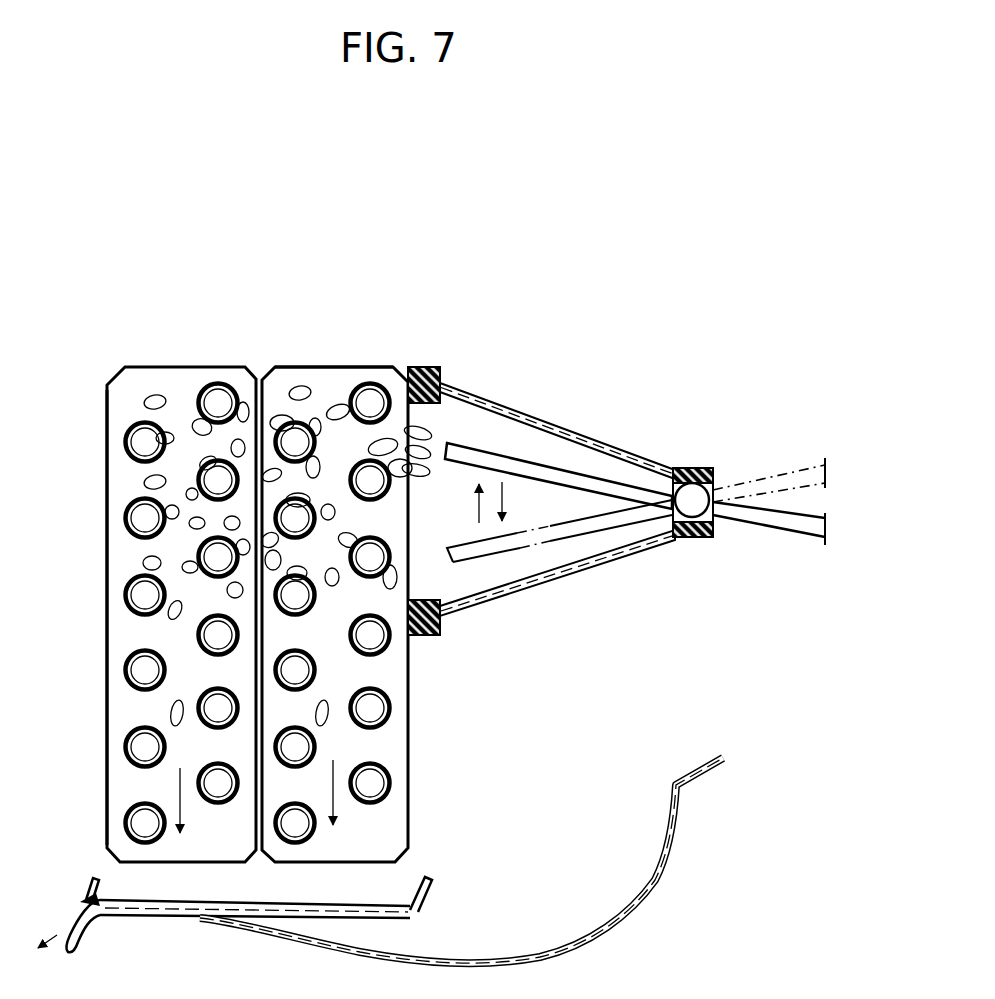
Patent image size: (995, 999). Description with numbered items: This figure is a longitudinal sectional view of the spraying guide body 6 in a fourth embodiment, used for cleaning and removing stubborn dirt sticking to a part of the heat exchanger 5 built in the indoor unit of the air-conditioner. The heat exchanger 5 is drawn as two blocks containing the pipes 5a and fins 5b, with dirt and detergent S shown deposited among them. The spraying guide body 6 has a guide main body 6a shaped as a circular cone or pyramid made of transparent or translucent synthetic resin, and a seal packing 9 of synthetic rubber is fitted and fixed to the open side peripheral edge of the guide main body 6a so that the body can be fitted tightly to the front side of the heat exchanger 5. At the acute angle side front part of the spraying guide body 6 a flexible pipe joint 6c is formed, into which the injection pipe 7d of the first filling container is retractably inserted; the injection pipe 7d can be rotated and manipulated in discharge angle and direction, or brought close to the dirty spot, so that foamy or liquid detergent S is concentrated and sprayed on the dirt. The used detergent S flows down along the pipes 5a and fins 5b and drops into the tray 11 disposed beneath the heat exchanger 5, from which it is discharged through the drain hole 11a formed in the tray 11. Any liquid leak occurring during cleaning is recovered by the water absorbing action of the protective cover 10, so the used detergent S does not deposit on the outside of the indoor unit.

The heat exchanger 5 is at (167, 344).
The pipes 5a is at (123, 605).
The fins 5b is at (118, 401).
The detergent S is at (284, 437).
The seal packing 9 is at (424, 367).
The spraying guide body 6 is at (632, 468).
The guide main body 6a is at (618, 438).
The flexible pipe joint 6c is at (692, 497).
The injection pipe 7d is at (773, 508).
The protective cover 10 is at (583, 948).
The tray 11 is at (234, 907).
The drain hole 11a is at (84, 903).